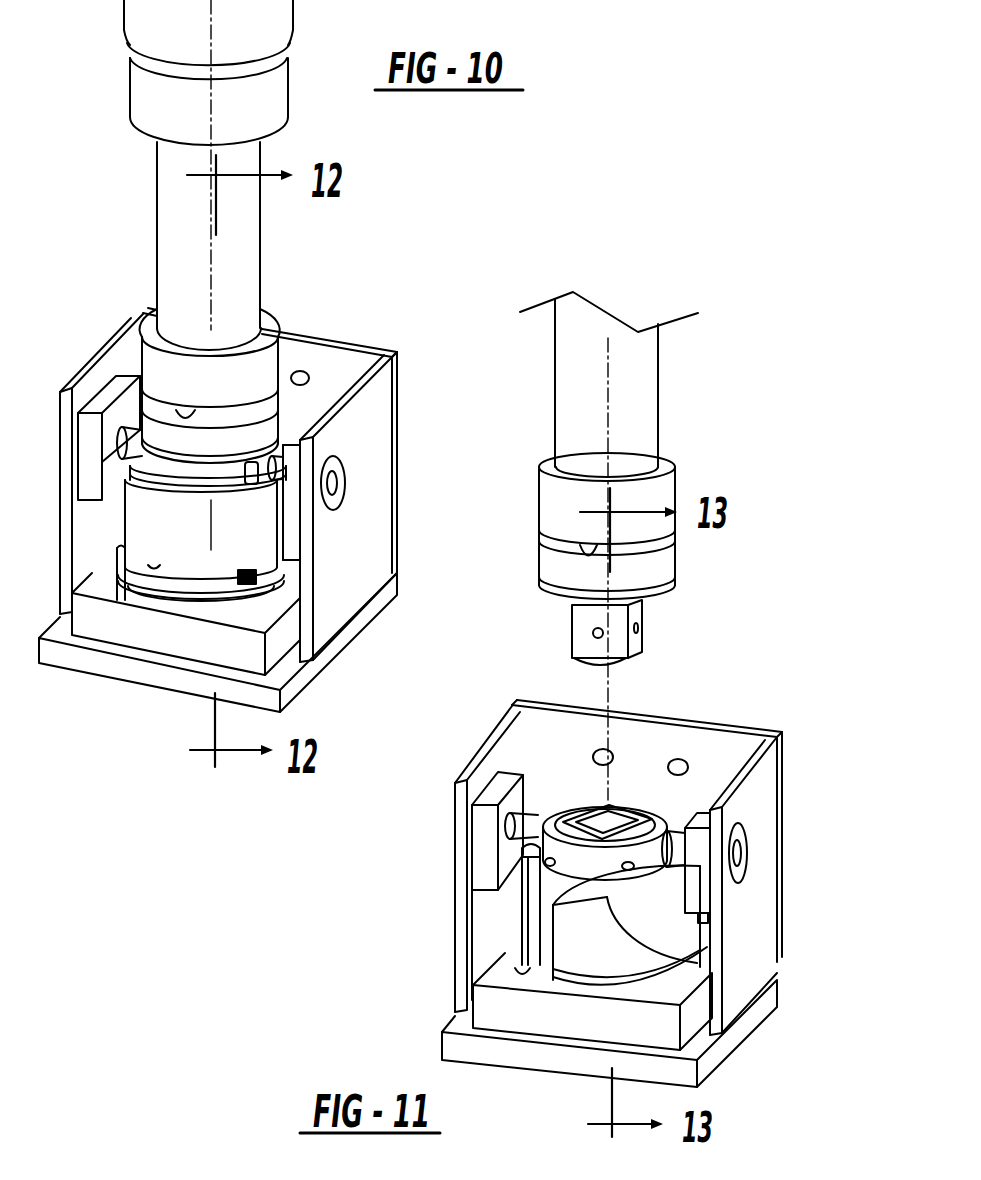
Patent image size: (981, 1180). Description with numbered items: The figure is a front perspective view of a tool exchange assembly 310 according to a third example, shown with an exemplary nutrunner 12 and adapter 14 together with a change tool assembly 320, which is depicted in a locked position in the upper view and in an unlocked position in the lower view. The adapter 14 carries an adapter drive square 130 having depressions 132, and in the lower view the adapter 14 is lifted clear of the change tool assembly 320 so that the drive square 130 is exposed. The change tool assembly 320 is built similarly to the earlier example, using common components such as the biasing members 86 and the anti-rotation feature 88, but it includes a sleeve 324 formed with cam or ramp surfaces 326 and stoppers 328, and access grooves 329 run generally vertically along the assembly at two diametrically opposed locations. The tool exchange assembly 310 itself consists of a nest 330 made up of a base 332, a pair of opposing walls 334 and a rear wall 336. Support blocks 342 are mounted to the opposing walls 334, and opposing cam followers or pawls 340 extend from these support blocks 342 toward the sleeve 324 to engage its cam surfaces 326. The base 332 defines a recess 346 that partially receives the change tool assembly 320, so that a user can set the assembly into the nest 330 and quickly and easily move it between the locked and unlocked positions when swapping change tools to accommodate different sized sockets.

In FIG. 10, the nutrunner 12 is at (183, 233).
In FIG. 11, the nutrunner 12 is at (638, 391).
In FIG. 10, the adapter 14 is at (255, 366).
In FIG. 11, the adapter 14 is at (663, 493).
In FIG. 10, the biasing members 86 is at (247, 587).
In FIG. 10, the anti-rotation feature 88 is at (152, 578).
In FIG. 11, the adapter drive square 130 is at (638, 651).
In FIG. 11, the depressions 132 is at (592, 634).
In FIG. 10, the tool exchange assembly 310 is at (40, 391).
In FIG. 11, the tool exchange assembly 310 is at (803, 891).
In FIG. 10, the change tool assembly 320 is at (143, 533).
In FIG. 11, the change tool assembly 320 is at (500, 912).
In FIG. 11, the sleeve 324 is at (663, 930).
In FIG. 10, the cam or ramp surfaces 326 is at (140, 479).
In FIG. 11, the cam or ramp surfaces 326 is at (637, 957).
In FIG. 10, the stoppers 328 is at (254, 484).
In FIG. 11, the stoppers 328 is at (532, 853).
In FIG. 11, the access grooves 329 is at (522, 968).
In FIG. 10, the nest 330 is at (240, 462).
In FIG. 11, the nest 330 is at (585, 846).
In FIG. 10, the base 332 is at (175, 638).
In FIG. 11, the base 332 is at (587, 1018).
In FIG. 10, the opposing walls 334 is at (67, 446).
In FIG. 11, the opposing walls 334 is at (502, 752).
In FIG. 10, the rear wall 336 is at (337, 372).
In FIG. 11, the rear wall 336 is at (673, 740).
In FIG. 10, the cam followers or pawls 340 is at (128, 438).
In FIG. 11, the cam followers or pawls 340 is at (527, 823).
In FIG. 10, the support blocks 342 is at (97, 410).
In FIG. 11, the support blocks 342 is at (493, 792).
In FIG. 10, the recess 346 is at (120, 567).
In FIG. 11, the recess 346 is at (520, 952).